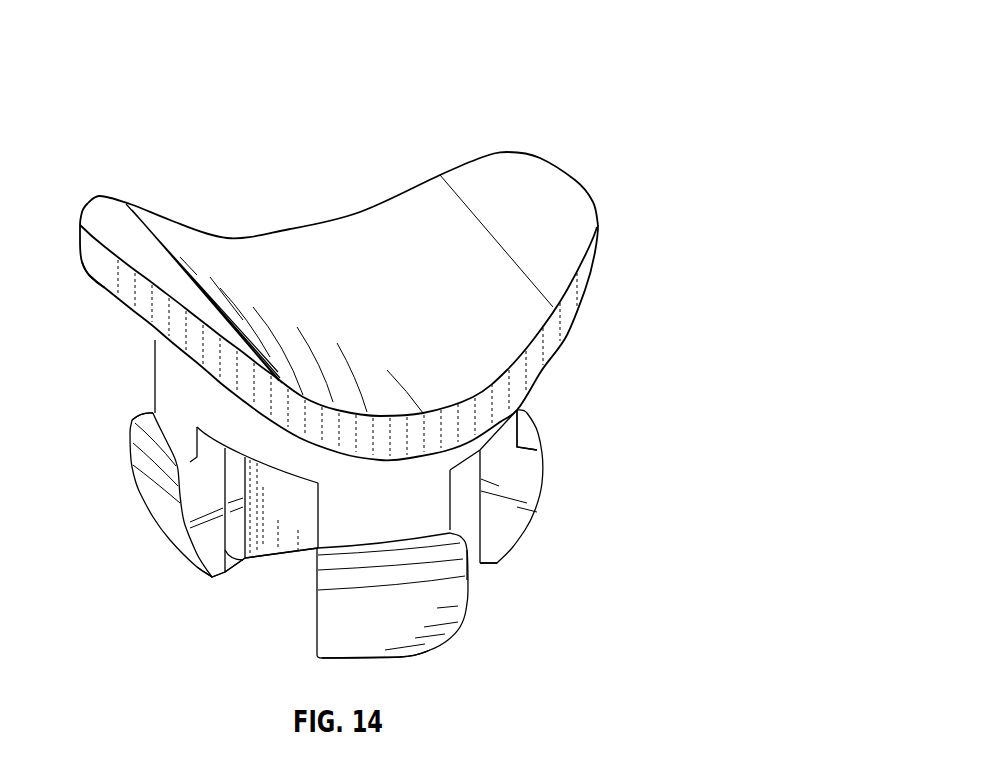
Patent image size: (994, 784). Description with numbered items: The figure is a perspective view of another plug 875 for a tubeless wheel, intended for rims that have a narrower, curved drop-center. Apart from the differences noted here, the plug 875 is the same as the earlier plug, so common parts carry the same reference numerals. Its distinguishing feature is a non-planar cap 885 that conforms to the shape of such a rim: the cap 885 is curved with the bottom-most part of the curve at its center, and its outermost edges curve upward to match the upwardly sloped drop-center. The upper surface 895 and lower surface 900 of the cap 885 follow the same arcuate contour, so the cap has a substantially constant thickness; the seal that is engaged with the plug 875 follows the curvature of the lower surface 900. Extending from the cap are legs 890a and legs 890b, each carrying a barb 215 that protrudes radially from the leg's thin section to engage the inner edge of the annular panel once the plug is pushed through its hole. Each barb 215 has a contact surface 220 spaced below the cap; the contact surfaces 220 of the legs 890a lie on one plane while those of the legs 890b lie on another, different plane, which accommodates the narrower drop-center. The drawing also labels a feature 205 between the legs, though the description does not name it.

The plug 875 is at (583, 88).
The upper surface 895 is at (307, 243).
The lower surface 900 is at (102, 287).
The non-planar cap 885 is at (153, 311).
The contact surface 220 is at (146, 429).
The barb 215 is at (149, 500).
The legs 890a is at (272, 563).
The legs 890b is at (213, 580).
The slot 205 is at (266, 609).